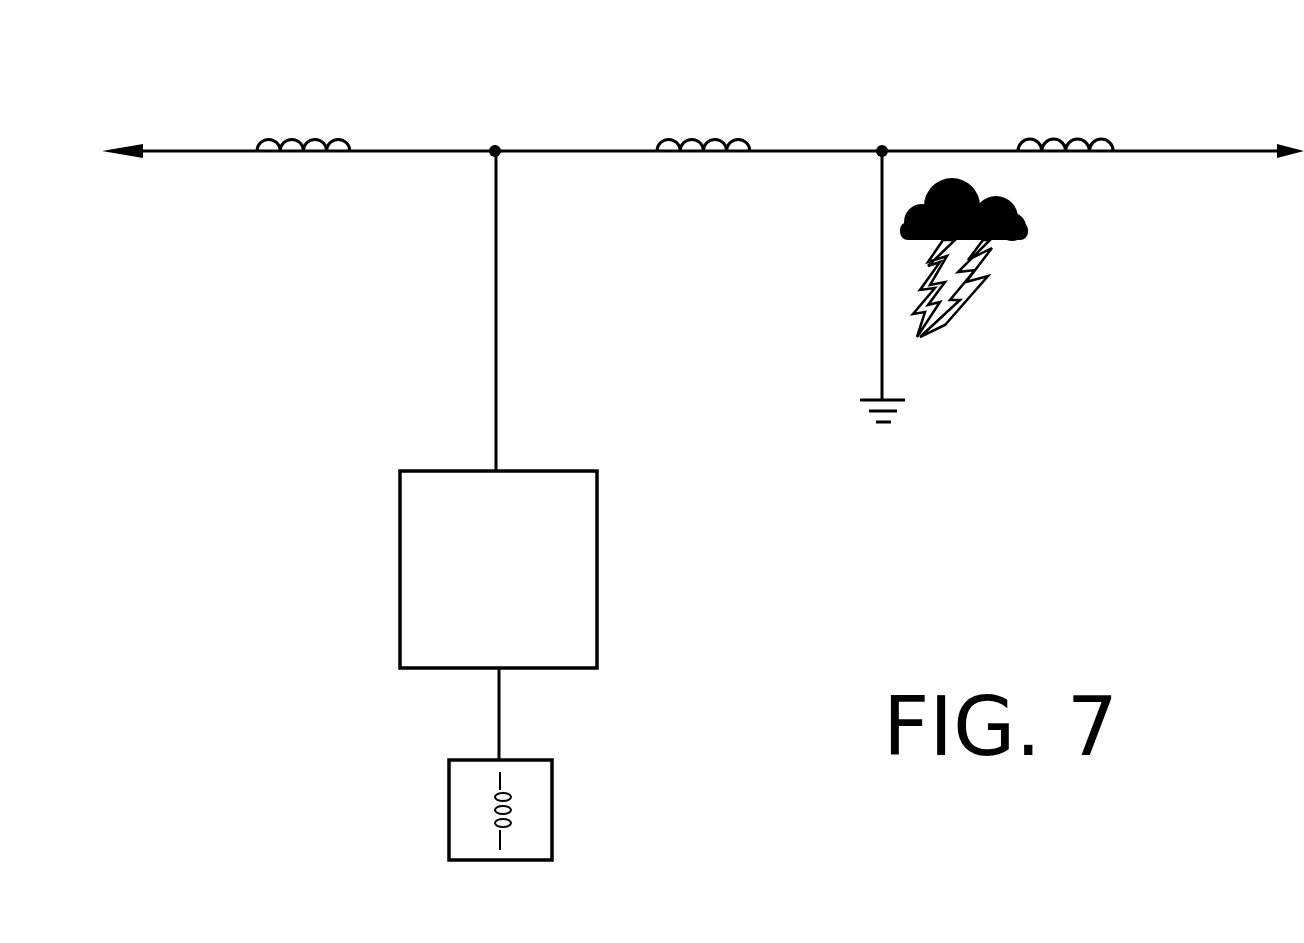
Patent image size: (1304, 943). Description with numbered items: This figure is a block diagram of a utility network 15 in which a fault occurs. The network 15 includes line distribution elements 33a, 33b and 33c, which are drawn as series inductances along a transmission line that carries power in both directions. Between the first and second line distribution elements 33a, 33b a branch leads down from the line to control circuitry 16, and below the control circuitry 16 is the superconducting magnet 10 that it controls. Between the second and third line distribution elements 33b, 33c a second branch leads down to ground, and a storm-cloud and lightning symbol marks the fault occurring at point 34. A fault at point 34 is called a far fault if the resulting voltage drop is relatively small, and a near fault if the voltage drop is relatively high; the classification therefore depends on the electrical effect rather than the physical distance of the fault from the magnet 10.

The line distribution element 33a is at (315, 138).
The line distribution element 33b is at (712, 138).
The line distribution element 33c is at (1075, 138).
The control circuitry 16 is at (598, 585).
The superconducting magnet 10 is at (553, 810).
The fault point 34 is at (884, 366).
The utility network 15 is at (222, 356).